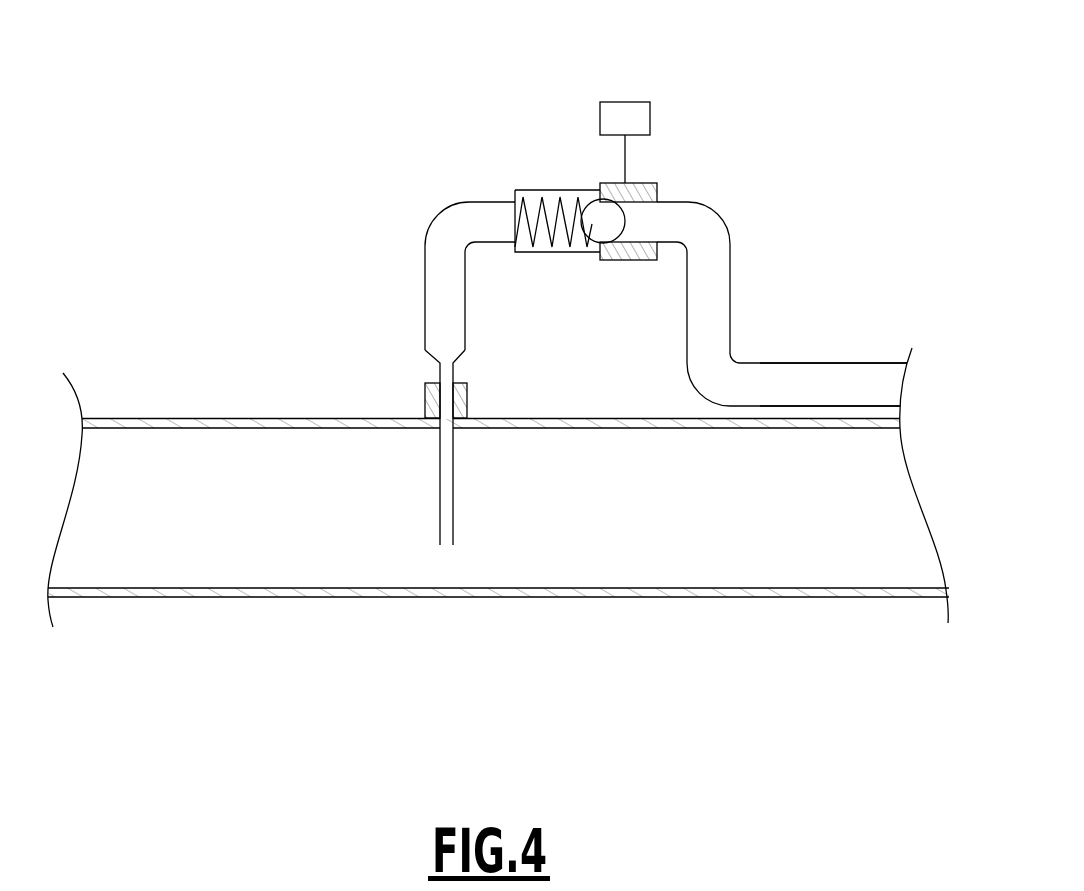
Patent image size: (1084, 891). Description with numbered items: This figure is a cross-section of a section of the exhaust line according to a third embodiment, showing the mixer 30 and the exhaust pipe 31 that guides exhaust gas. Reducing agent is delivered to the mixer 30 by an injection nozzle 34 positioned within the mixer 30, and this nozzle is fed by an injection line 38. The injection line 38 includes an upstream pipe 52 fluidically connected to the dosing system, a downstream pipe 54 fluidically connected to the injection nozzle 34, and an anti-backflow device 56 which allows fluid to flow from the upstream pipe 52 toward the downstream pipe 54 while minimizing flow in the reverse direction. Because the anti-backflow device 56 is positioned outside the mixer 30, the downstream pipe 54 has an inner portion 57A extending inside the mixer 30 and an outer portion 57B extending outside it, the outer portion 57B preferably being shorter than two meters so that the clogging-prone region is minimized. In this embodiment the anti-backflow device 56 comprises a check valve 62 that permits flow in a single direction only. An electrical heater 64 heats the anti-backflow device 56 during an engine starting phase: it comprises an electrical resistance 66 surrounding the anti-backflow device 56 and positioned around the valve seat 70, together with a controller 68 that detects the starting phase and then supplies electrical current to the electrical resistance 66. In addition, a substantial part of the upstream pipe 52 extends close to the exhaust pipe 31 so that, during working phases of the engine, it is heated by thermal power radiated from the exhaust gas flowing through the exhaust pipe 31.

The mixer 30 is at (203, 560).
The exhaust pipe 31 is at (728, 597).
The injection nozzle 34 is at (453, 518).
The injection line 38 is at (760, 117).
The upstream pipe 52 is at (722, 303).
The downstream pipe 54 is at (436, 305).
The anti-backflow device 56 is at (540, 178).
The inner portion 57A is at (453, 473).
The outer portion 57B is at (435, 264).
The check valve 62 is at (545, 253).
The electrical heater 64 is at (668, 148).
The electrical resistance 66 is at (658, 192).
The controller 68 is at (620, 110).
The valve seat 70 is at (595, 208).